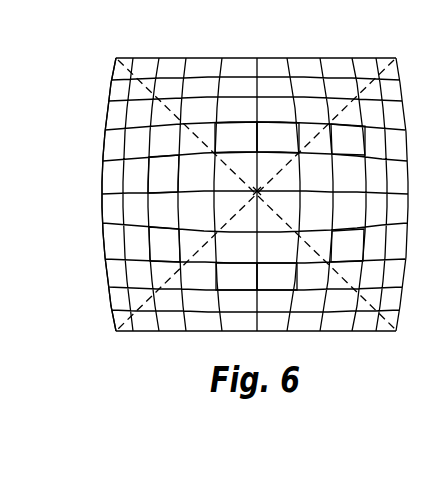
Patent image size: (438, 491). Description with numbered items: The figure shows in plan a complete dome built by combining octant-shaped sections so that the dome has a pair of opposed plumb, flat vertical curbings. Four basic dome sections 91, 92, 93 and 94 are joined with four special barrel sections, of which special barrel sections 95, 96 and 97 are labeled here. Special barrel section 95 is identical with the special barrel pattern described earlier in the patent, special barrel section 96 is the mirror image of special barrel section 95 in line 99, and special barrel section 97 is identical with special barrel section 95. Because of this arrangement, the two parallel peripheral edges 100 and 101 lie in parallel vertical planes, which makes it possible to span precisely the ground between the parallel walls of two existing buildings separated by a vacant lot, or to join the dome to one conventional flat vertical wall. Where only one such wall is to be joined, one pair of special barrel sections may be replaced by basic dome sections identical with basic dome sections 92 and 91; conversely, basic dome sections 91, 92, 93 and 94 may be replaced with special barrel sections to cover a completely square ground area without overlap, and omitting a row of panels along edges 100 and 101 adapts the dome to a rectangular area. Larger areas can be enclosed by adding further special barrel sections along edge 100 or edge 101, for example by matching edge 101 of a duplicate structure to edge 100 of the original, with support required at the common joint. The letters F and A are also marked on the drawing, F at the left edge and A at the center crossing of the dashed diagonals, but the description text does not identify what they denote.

The left center zone of raster 91 is at (173, 258).
The upper left zone of raster 92 is at (174, 183).
The upper right zone of raster 93 is at (357, 150).
The lower right zone of raster 94 is at (359, 260).
The central zones of raster 95 is at (247, 151).
The lower central zone of raster 96 is at (286, 290).
The upper central zone of raster 97 is at (286, 151).
The center vertical line of raster 99 is at (255, 251).
The diagonal of raster 100 is at (397, 323).
The top edge of raster 101 is at (313, 58).
The raster field F is at (102, 191).
The center point of raster A is at (271, 183).